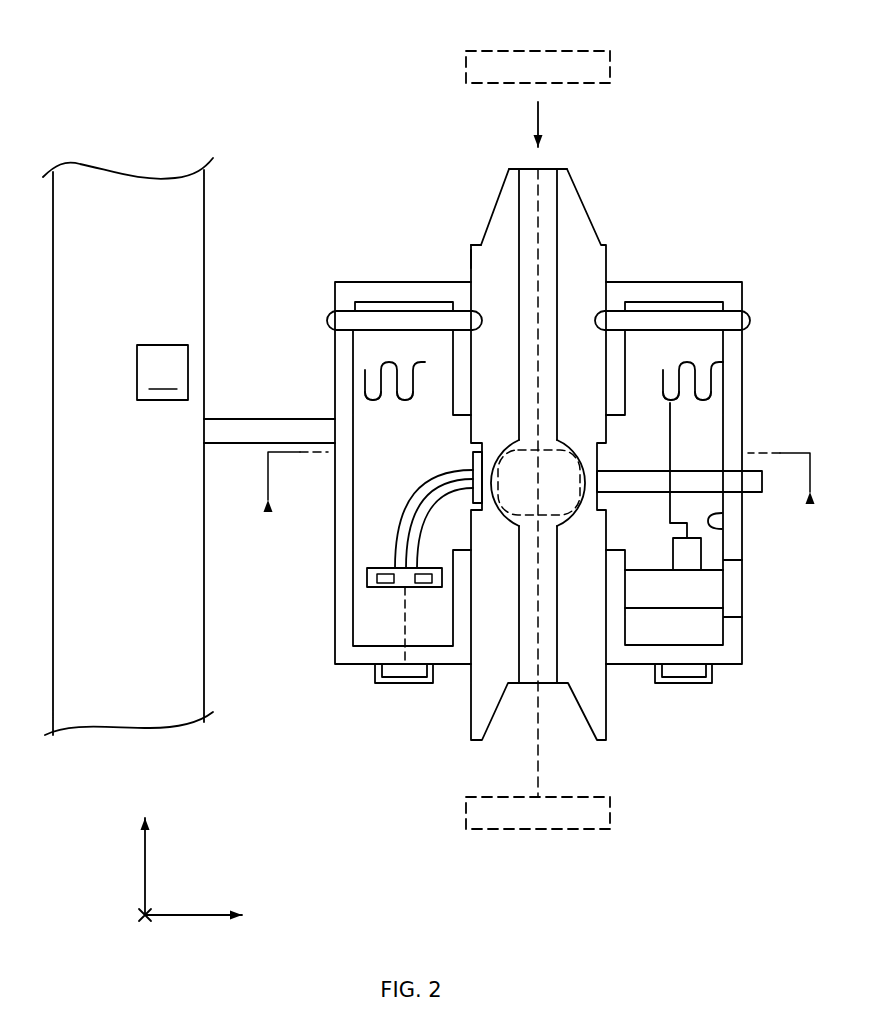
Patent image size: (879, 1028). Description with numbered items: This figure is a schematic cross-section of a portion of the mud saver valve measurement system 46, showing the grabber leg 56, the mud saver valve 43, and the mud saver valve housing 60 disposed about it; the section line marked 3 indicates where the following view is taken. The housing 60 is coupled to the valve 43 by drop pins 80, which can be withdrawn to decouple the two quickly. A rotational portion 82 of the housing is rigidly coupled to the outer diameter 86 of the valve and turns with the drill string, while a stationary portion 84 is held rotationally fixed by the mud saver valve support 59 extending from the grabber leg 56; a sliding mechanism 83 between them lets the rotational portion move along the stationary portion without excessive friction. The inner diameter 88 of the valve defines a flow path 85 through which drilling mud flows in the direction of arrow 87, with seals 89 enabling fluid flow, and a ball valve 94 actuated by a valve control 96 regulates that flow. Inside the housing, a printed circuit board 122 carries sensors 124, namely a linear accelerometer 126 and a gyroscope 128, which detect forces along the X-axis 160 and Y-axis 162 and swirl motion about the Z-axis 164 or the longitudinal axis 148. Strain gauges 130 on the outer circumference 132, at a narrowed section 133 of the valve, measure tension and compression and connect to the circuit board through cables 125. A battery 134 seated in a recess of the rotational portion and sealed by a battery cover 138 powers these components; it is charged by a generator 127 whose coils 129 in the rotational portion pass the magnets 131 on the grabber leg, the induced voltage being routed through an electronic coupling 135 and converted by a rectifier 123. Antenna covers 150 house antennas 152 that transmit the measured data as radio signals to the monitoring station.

The section line 3 is at (537, 476).
The mud saver valve 43 is at (620, 235).
The mud saver valve measurement system 46 is at (740, 218).
The grabber leg 56 is at (53, 262).
The mud saver valve support 59 is at (245, 419).
The mud saver valve housing 60 is at (703, 275).
The drop pins 80 is at (330, 330).
The rotational portion 82 is at (712, 440).
The sliding mechanism 83 is at (722, 523).
The stationary portion 84 is at (735, 375).
The flow path 85 is at (550, 233).
The outer diameter 86 is at (470, 268).
The arrow 87 is at (540, 118).
The inner diameter 88 is at (521, 183).
The seals 89 is at (540, 52).
The ball valve 94 is at (574, 452).
The valve control 96 is at (755, 492).
The printed circuit board 122 is at (375, 578).
The rectifier 123 is at (705, 553).
The sensors 124 is at (383, 492).
The cables 125 is at (383, 518).
The linear accelerometer 126 is at (385, 587).
The generator 127 is at (137, 332).
The gyroscope 128 is at (432, 587).
The coils 129 is at (372, 358).
The strain gauges 130 is at (447, 466).
The magnets 131 is at (162, 372).
The outer circumference 132 is at (470, 255).
The narrowed section 133 is at (470, 462).
The battery 134 is at (695, 588).
The electronic coupling 135 is at (670, 428).
The battery cover 138 is at (742, 605).
The longitudinal axis 148 is at (540, 752).
The antenna covers 150 is at (405, 683).
The antennas 152 is at (383, 683).
The X-axis 160 is at (185, 918).
The Y-axis 162 is at (140, 915).
The Z-axis 164 is at (146, 872).